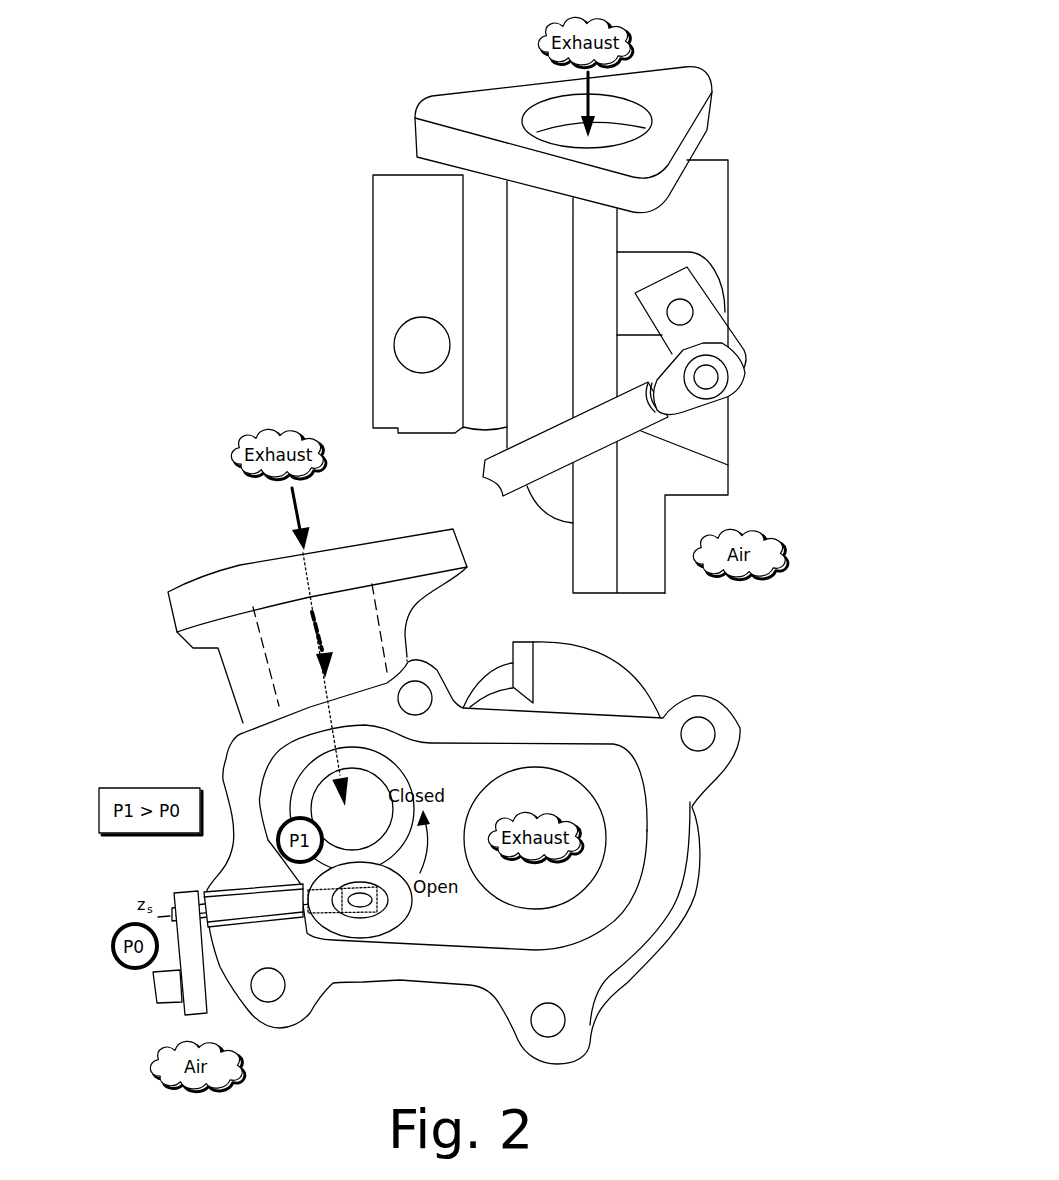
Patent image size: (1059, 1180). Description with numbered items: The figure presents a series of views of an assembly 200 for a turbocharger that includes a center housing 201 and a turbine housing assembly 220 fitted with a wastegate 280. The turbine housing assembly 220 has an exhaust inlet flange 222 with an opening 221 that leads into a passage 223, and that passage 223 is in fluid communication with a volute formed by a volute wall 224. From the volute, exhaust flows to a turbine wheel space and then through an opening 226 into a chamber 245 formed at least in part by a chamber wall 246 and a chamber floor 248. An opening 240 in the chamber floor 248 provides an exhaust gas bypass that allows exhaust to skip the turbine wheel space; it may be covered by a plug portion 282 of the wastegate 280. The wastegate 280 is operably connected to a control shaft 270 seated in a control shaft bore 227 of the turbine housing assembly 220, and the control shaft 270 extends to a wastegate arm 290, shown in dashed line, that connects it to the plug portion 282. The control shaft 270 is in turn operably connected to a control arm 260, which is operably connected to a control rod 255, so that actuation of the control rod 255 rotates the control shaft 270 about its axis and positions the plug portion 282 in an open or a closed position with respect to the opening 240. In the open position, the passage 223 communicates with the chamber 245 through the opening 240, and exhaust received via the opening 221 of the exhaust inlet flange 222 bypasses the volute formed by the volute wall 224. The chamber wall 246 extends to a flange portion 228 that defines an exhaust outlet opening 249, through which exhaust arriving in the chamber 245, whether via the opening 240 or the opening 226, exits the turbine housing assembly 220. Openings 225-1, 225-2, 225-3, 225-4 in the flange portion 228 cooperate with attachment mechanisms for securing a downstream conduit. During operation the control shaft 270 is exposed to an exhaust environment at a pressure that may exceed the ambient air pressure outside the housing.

The assembly 200 is at (246, 109).
The center housing 201 is at (372, 228).
The turbine housing assembly 220 is at (707, 160).
The opening 221 is at (641, 101).
The exhaust inlet flange 222 is at (712, 95).
The passage 223 is at (262, 642).
The volute wall 224 is at (567, 523).
The opening 225-1 is at (715, 742).
The opening 225-2 is at (566, 1023).
The opening 225-3 is at (280, 1000).
The opening 225-4 is at (420, 680).
The opening 226 is at (520, 913).
The control shaft bore 227 is at (273, 923).
The flange portion 228 is at (729, 200).
The opening 240 is at (278, 783).
The chamber 245 is at (454, 740).
The chamber wall 246 is at (604, 763).
The chamber floor 248 is at (477, 781).
The exhaust outlet opening 249 is at (660, 836).
The control rod 255 is at (728, 466).
The control arm 260 is at (734, 336).
The control shaft 270 is at (688, 301).
The wastegate 280 is at (380, 908).
The plug portion 282 is at (422, 898).
The wastegate arm 290 is at (349, 915).